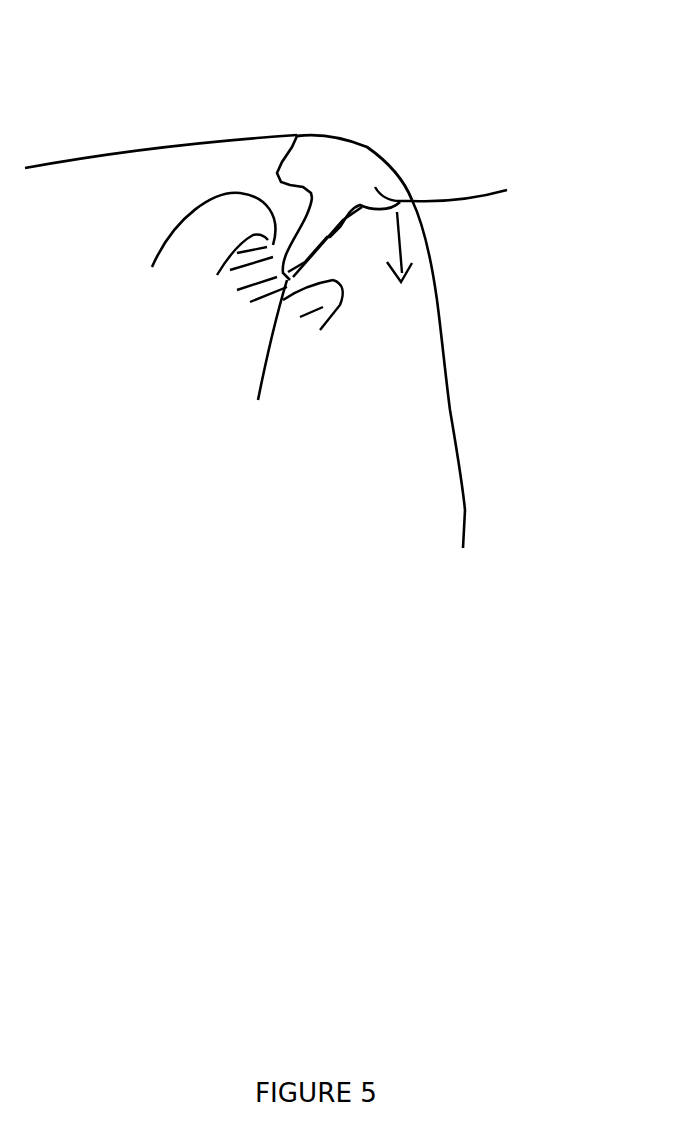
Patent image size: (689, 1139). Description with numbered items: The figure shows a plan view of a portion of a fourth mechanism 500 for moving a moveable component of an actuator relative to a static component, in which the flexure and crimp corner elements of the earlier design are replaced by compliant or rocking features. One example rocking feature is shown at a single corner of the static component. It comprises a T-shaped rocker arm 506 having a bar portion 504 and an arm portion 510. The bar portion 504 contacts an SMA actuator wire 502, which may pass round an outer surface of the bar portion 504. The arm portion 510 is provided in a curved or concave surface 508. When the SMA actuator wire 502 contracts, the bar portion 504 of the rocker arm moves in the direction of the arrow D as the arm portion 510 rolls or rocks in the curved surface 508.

The fourth mechanism 500 is at (78, 82).
The SMA actuator wire 502 is at (452, 410).
The bar portion 504 is at (380, 148).
The T-shaped rocker arm 506 is at (473, 182).
The curved surface 508 is at (218, 261).
The arm portion 510 is at (260, 369).
The direction of the arrow D is at (396, 271).